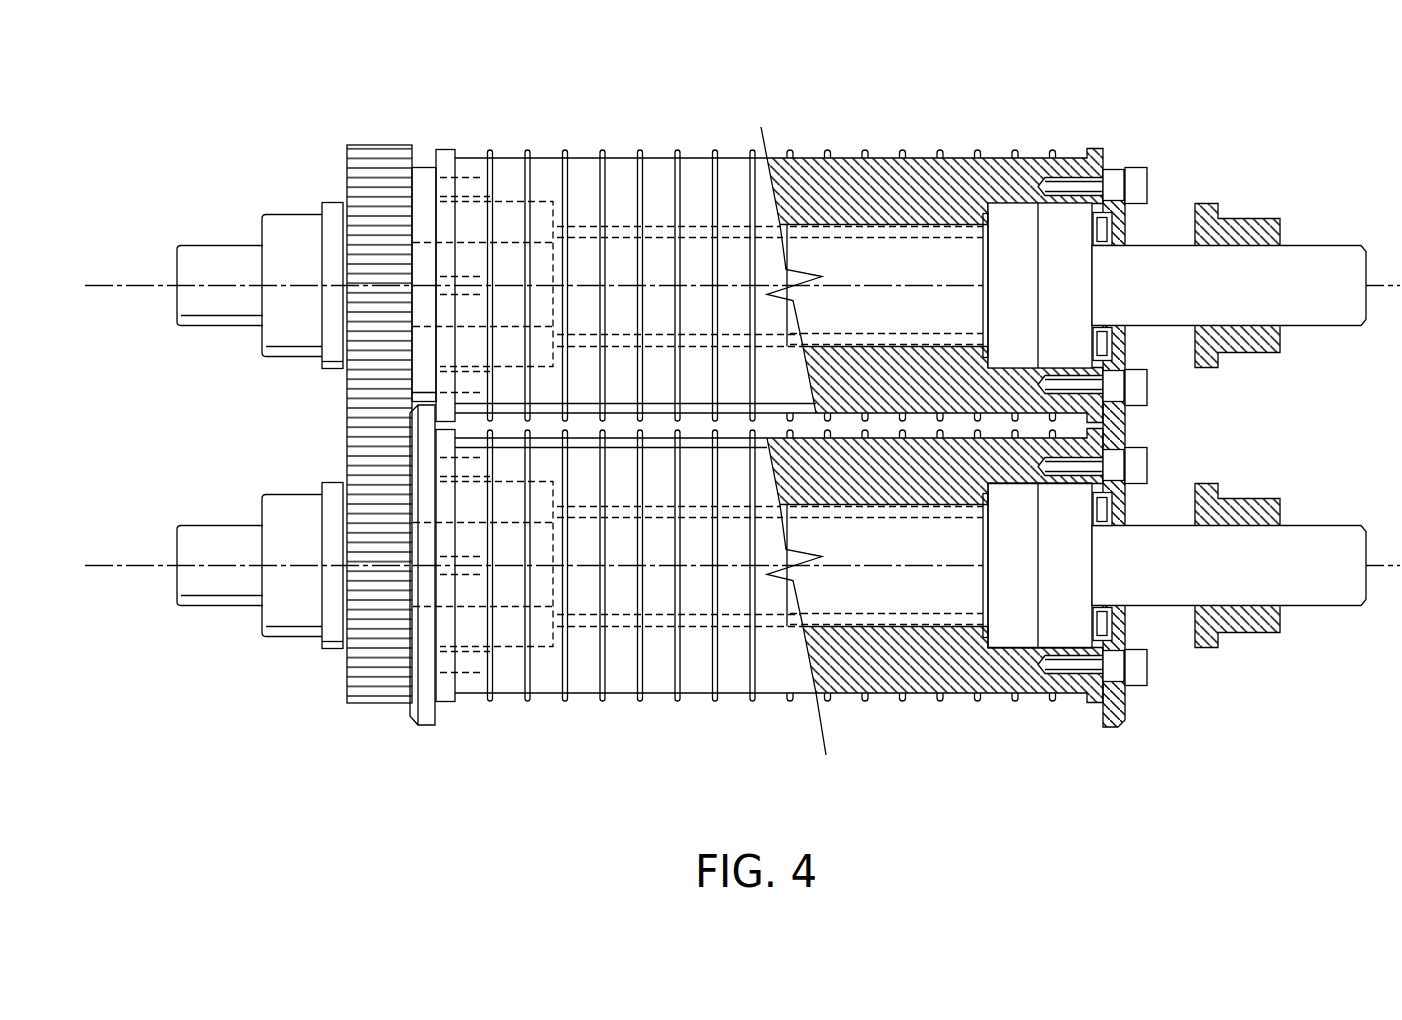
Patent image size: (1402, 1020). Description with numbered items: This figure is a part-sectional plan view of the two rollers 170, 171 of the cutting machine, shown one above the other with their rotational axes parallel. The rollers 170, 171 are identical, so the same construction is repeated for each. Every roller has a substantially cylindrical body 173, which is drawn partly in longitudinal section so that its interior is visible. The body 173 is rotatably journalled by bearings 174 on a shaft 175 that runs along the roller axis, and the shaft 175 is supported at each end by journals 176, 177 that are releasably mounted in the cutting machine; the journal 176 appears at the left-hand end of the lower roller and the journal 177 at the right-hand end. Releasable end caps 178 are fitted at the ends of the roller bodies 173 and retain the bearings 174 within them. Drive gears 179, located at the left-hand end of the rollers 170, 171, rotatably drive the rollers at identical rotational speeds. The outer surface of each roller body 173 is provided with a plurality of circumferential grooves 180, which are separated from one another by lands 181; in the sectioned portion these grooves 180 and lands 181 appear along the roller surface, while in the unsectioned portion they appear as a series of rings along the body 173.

The roller 170 is at (777, 227).
The roller 171 is at (771, 607).
The cylindrical body 173 is at (877, 662).
The bearings 174 is at (1015, 225).
The shaft 175 is at (1319, 241).
The journal 176 is at (220, 586).
The journal 177 is at (1252, 211).
The end caps 178 is at (1131, 364).
The drive gears 179 is at (391, 136).
The circumferential grooves 180 is at (994, 705).
The lands 181 is at (884, 152).